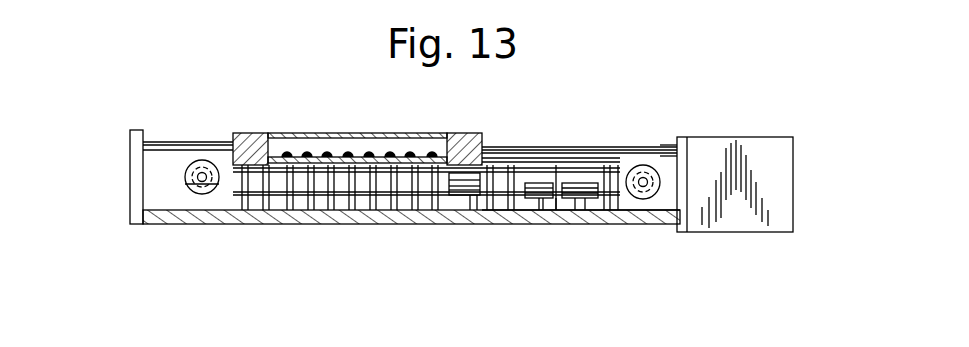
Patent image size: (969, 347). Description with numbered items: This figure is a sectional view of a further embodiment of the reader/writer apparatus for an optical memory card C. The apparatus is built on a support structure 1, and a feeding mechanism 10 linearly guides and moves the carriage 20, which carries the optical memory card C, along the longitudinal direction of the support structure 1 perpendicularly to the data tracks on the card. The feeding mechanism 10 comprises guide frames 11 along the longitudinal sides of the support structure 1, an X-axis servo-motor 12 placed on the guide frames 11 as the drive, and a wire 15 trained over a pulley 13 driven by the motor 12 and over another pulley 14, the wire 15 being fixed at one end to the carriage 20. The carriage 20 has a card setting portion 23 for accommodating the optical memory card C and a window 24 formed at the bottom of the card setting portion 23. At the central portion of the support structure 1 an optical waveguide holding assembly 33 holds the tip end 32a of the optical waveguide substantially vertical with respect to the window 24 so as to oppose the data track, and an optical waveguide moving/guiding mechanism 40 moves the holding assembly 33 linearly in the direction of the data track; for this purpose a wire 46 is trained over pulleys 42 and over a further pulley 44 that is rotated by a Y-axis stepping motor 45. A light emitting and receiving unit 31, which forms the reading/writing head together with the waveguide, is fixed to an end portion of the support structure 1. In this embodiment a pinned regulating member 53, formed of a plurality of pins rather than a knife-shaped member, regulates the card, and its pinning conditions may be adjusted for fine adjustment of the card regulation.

The support structure 1 is at (350, 238).
The feeding mechanism 10 is at (637, 148).
The guide frames 11 is at (180, 143).
The X-axis servo-motor 12 is at (655, 212).
The pulley 13 is at (667, 147).
The pulley 14 is at (200, 194).
The wire 15 is at (578, 182).
The carriage 20 is at (240, 132).
The card setting portion 23 is at (370, 134).
The window 24 is at (340, 170).
The light emitting and receiving unit 31 is at (793, 166).
The tip end of optical waveguide 32a is at (450, 168).
The optical waveguide holding assembly 33 is at (456, 140).
The optical waveguide moving/guiding mechanism 40 is at (545, 228).
The pulleys 42 is at (468, 224).
The pulley 44 is at (598, 156).
The Y-axis stepping motor 45 is at (596, 212).
The wire 46 is at (503, 168).
The pinned regulating member 53 is at (250, 215).
The optical memory card C is at (405, 154).